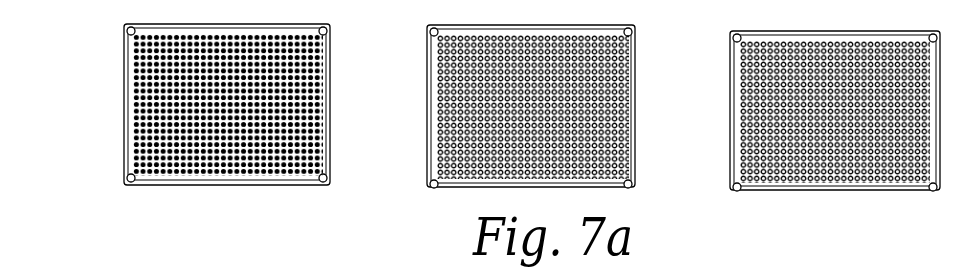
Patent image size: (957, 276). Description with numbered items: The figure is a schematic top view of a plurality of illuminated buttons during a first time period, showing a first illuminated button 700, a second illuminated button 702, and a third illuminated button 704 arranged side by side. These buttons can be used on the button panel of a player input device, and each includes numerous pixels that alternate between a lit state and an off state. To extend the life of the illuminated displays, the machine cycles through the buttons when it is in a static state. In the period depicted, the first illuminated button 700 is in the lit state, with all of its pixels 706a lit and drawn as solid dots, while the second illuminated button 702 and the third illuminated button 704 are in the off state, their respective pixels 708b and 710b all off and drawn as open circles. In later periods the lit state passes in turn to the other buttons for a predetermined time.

The first illuminated button 700 is at (191, 136).
The second illuminated button 702 is at (496, 138).
The third illuminated button 704 is at (801, 142).
The pixels 706a is at (130, 129).
The pixels 708b is at (436, 132).
The pixels 710b is at (742, 136).